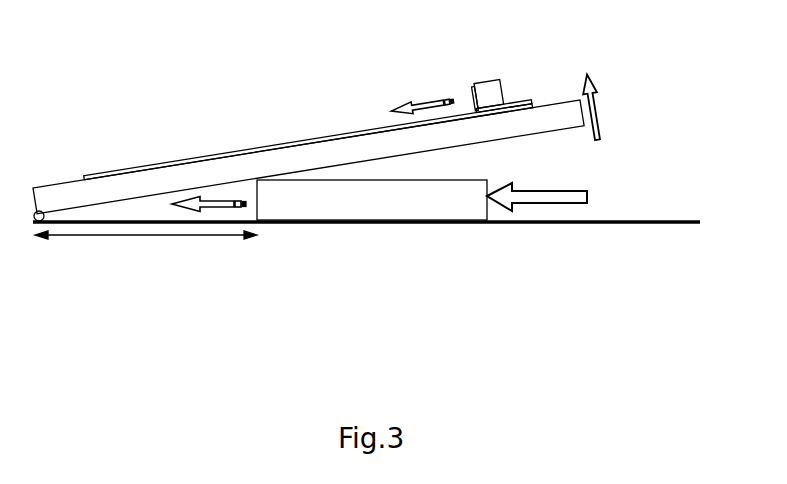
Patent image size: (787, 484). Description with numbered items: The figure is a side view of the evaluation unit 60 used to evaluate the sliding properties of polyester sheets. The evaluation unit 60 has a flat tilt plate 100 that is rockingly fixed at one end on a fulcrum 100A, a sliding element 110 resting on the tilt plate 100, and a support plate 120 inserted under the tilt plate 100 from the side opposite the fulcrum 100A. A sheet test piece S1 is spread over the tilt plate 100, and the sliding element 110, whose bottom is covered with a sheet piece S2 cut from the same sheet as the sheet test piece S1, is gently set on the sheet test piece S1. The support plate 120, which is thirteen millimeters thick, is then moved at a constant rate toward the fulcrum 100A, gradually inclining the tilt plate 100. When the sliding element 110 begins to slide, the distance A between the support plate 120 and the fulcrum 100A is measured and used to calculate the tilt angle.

The evaluation unit 60 is at (640, 130).
The tilt plate 100 is at (193, 178).
The fulcrum 100A is at (41, 211).
The sliding element 110 is at (490, 85).
The support plate 120 is at (390, 195).
The sheet test piece S1 is at (263, 150).
The sheet piece S2 is at (508, 100).
The distance A is at (153, 237).